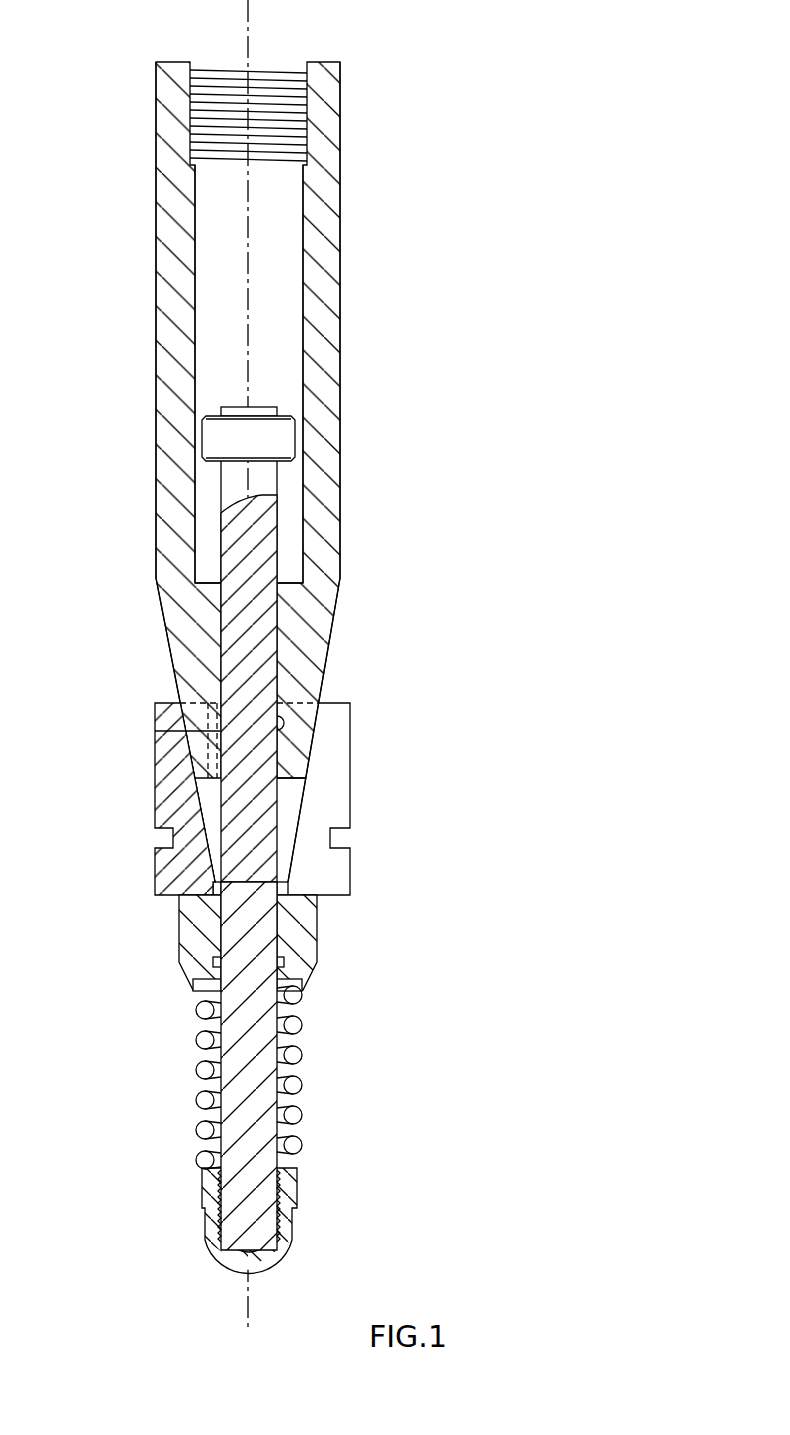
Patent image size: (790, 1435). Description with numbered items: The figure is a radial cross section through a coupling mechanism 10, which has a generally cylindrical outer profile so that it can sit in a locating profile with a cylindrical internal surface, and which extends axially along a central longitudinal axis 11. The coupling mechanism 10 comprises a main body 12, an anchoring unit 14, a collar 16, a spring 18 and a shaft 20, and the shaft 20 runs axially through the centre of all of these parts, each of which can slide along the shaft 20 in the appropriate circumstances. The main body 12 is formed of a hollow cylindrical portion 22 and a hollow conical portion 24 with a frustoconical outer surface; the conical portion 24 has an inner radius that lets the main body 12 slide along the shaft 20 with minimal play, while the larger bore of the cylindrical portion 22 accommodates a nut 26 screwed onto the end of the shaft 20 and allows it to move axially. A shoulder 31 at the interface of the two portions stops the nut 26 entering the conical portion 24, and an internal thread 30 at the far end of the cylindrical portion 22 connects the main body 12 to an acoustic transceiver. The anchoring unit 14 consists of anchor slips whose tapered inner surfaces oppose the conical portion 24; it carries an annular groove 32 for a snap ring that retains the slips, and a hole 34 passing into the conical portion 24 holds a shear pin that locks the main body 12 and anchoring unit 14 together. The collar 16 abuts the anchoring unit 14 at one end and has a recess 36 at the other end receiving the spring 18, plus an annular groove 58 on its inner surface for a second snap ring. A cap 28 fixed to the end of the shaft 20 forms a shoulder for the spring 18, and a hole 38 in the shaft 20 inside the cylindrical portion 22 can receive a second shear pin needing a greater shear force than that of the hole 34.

The coupling mechanism 10 is at (337, 665).
The longitudinal axis 11 is at (246, 277).
The main body 12 is at (327, 360).
The anchoring unit 14 is at (343, 785).
The collar 16 is at (300, 943).
The spring 18 is at (300, 1085).
The shaft 20 is at (240, 1130).
The cylindrical portion 22 is at (343, 475).
The conical portion 24 is at (330, 625).
The nut 26 is at (215, 440).
The cap 28 is at (292, 1195).
The internal thread 30 is at (275, 105).
The shoulder 31 is at (292, 580).
The annular groove 32 is at (168, 838).
The hole 34 is at (170, 725).
The recess 36 is at (197, 995).
The hole 38 is at (235, 577).
The annular groove 58 is at (213, 960).